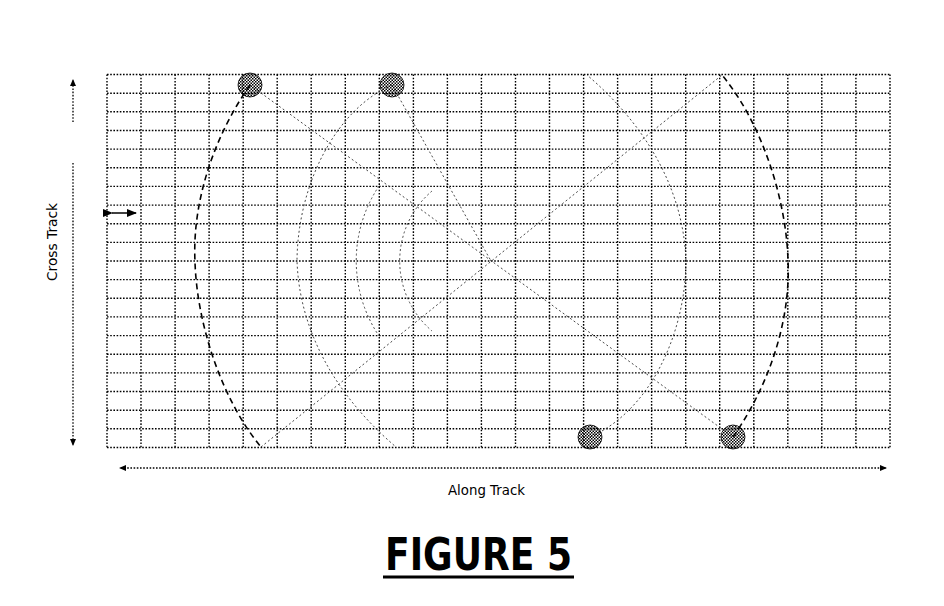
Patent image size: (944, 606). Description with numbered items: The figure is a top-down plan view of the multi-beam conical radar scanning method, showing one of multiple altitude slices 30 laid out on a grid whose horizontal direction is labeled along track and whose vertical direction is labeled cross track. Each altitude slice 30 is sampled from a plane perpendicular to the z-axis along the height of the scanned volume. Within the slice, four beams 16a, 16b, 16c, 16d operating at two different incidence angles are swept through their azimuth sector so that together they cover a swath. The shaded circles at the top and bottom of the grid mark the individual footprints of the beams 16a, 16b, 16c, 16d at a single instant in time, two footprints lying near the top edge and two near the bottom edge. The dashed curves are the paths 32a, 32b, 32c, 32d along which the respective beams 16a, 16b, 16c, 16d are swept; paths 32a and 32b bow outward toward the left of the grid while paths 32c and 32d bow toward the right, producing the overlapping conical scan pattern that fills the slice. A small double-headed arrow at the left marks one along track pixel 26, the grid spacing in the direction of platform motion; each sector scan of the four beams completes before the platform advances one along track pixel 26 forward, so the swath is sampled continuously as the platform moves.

The beam 16a is at (250, 78).
The beam 16b is at (392, 80).
The beam 16c is at (735, 441).
The beam 16d is at (598, 447).
The along track pixel 26 is at (120, 205).
The altitude slice 30 is at (130, 95).
The path 32a is at (220, 400).
The path 32b is at (372, 420).
The path 32c is at (746, 102).
The path 32d is at (602, 93).